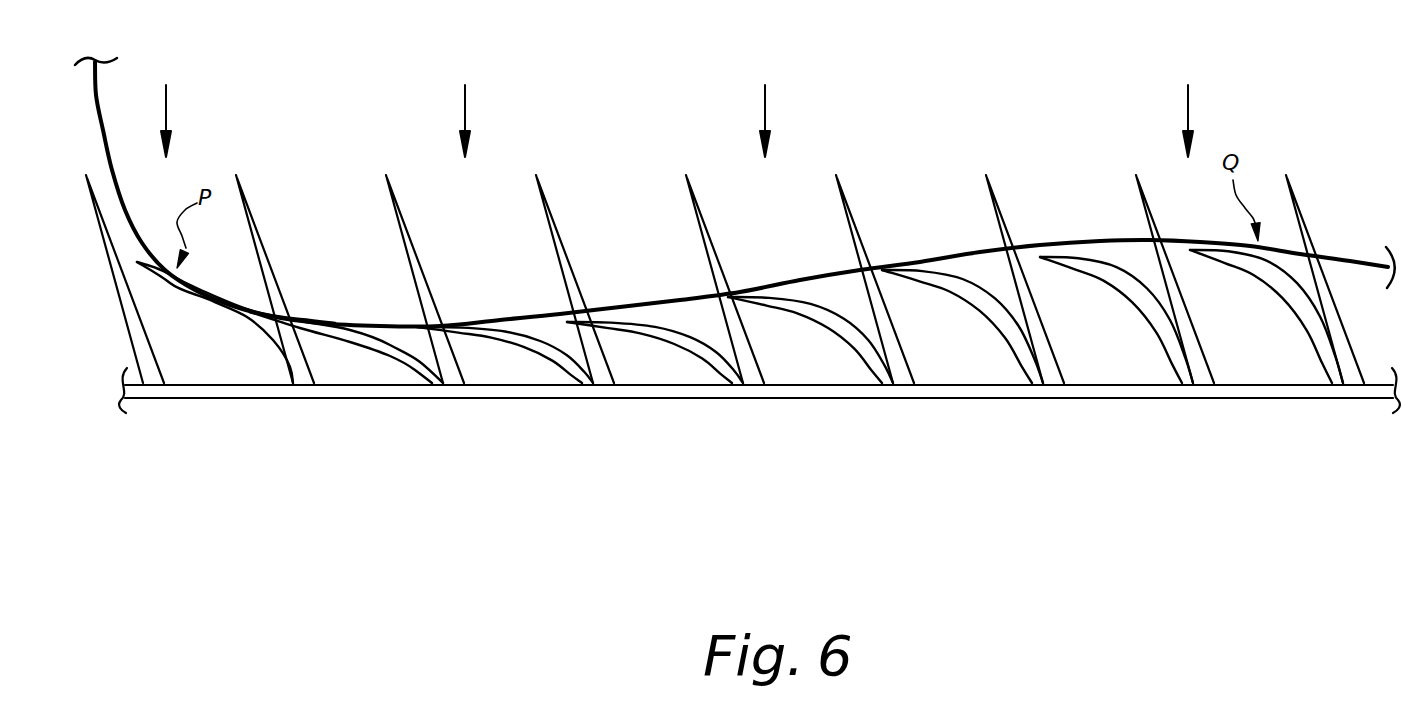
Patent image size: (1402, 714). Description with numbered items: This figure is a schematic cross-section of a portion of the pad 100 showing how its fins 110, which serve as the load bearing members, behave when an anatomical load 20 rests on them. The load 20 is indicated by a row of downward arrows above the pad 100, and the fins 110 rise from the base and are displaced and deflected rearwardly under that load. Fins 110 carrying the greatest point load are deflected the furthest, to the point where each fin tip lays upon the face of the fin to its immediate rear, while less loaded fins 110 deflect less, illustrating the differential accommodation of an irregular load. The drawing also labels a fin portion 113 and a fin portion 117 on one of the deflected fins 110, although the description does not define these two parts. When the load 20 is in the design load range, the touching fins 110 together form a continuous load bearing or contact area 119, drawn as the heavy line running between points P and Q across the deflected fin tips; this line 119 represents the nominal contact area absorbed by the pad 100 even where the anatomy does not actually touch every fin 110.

The anatomical load 20 is at (215, 81).
The pad 100 is at (368, 430).
The fins 110 is at (1316, 366).
The flexible arm 113 is at (1134, 278).
The arm root portion 117 is at (1134, 281).
The continuous load bearing or contact area 119 is at (508, 296).